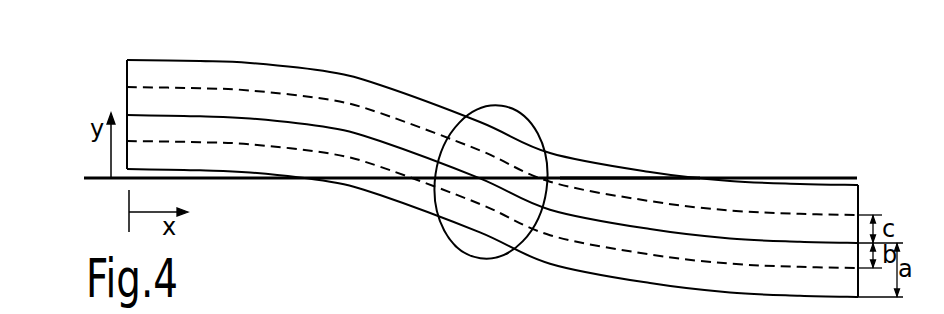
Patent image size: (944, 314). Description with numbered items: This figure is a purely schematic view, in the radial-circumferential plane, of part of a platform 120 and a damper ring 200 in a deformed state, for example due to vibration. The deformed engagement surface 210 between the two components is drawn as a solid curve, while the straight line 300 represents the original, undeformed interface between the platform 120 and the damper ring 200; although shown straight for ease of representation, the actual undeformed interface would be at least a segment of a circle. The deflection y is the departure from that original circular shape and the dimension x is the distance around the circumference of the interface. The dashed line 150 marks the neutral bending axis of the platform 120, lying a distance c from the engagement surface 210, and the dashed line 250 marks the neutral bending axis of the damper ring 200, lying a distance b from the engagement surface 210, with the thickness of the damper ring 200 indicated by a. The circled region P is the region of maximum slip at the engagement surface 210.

The platform 120 is at (368, 77).
The neutral bending axis of the platform 150 is at (247, 90).
The engagement surface 210 is at (177, 114).
The neutral bending axis of the damper ring 250 is at (225, 143).
The damper ring 200 is at (630, 268).
The region of maximum slip P is at (488, 105).
The undeformed interface 300 is at (586, 177).